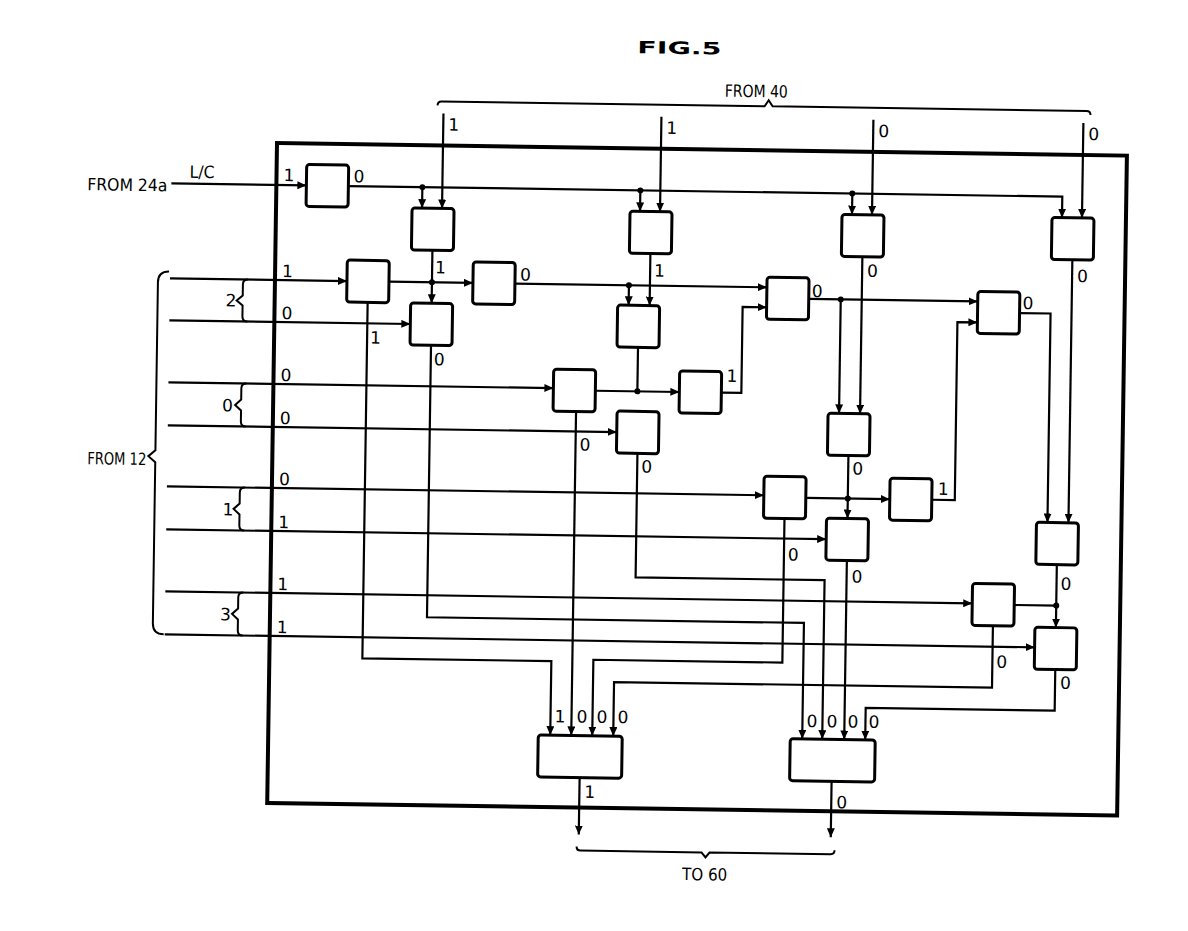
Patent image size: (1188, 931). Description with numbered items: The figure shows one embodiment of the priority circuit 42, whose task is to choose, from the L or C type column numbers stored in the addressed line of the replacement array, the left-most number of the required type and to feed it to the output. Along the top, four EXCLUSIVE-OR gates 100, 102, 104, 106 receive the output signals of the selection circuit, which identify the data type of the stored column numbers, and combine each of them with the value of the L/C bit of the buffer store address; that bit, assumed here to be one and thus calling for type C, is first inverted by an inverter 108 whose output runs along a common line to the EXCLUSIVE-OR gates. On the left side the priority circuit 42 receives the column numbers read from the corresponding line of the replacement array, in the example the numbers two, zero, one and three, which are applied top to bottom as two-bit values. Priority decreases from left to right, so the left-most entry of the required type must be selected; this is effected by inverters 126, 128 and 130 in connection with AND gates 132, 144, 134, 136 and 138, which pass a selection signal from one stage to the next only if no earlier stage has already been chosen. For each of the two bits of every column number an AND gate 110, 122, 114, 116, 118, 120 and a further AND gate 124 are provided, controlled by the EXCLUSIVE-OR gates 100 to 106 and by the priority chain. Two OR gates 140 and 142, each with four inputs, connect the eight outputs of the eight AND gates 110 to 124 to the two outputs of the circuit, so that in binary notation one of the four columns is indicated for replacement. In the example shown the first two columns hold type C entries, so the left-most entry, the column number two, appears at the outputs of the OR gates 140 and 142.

The priority circuit 42 is at (1127, 330).
The EXCLUSIVE-OR gate 100 is at (413, 221).
The EXCLUSIVE-OR gate 102 is at (631, 221).
The EXCLUSIVE-OR gate 104 is at (843, 221).
The EXCLUSIVE-OR gate 106 is at (1053, 221).
The inverter 108 is at (308, 206).
The AND gate 110 is at (367, 259).
The AND gate 114 is at (576, 365).
The AND gate 116 is at (663, 440).
The AND gate 118 is at (789, 469).
The AND gate 120 is at (874, 547).
The AND gate 122 is at (455, 332).
The AND gate 124 is at (1076, 616).
The inverter 126 is at (497, 259).
The inverter 128 is at (704, 365).
The inverter 130 is at (916, 469).
The AND gate 132 is at (662, 309).
The AND gate 134 is at (874, 412).
The AND gate 136 is at (1001, 281).
The AND gate 138 is at (1042, 519).
The OR gate 140 is at (631, 757).
The OR gate 142 is at (884, 757).
The AND gate 144 is at (790, 270).